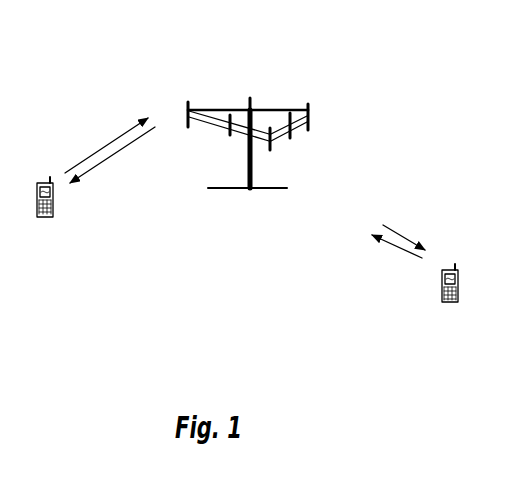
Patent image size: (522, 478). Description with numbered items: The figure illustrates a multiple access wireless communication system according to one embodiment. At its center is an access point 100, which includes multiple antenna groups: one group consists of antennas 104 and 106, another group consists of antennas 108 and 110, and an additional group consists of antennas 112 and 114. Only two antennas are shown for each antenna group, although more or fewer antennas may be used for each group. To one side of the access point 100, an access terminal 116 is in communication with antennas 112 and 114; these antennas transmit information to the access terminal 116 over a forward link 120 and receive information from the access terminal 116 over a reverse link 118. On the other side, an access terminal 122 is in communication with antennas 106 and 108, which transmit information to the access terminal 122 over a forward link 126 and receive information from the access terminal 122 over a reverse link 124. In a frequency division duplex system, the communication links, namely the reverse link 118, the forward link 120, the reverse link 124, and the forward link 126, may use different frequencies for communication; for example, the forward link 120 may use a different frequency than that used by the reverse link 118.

The access point 100 is at (243, 189).
The antenna 104 is at (272, 149).
The antenna 106 is at (291, 138).
The antenna 108 is at (315, 120).
The antenna 110 is at (252, 102).
The antenna 112 is at (192, 108).
The antenna 114 is at (230, 135).
The access terminal 116 is at (47, 183).
The reverse link 118 is at (110, 146).
The forward link 120 is at (121, 152).
The access terminal 122 is at (451, 266).
The reverse link 124 is at (387, 244).
The forward link 126 is at (405, 235).